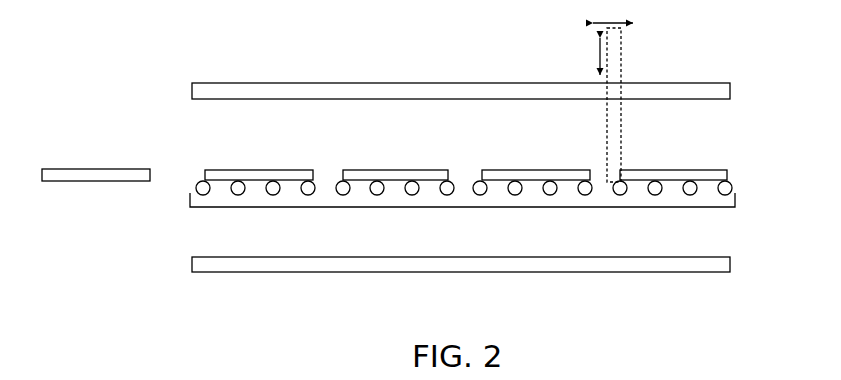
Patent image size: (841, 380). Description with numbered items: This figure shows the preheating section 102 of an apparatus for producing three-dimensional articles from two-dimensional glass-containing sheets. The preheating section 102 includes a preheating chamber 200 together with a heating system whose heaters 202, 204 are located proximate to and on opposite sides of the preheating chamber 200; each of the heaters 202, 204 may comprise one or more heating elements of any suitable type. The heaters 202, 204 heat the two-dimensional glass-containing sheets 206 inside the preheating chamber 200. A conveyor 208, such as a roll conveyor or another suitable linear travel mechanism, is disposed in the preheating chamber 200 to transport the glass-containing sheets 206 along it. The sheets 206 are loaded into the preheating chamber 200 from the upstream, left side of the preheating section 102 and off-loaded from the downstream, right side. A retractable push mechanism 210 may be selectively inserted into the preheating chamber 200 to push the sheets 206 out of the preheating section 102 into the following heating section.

The preheating section 102 is at (452, 68).
The preheating chamber 200 is at (362, 127).
The heater 202 is at (295, 88).
The heater 204 is at (312, 263).
The 2D glass-containing sheets 206 is at (92, 168).
The conveyor 208 is at (470, 207).
The retractable push mechanism 210 is at (615, 72).